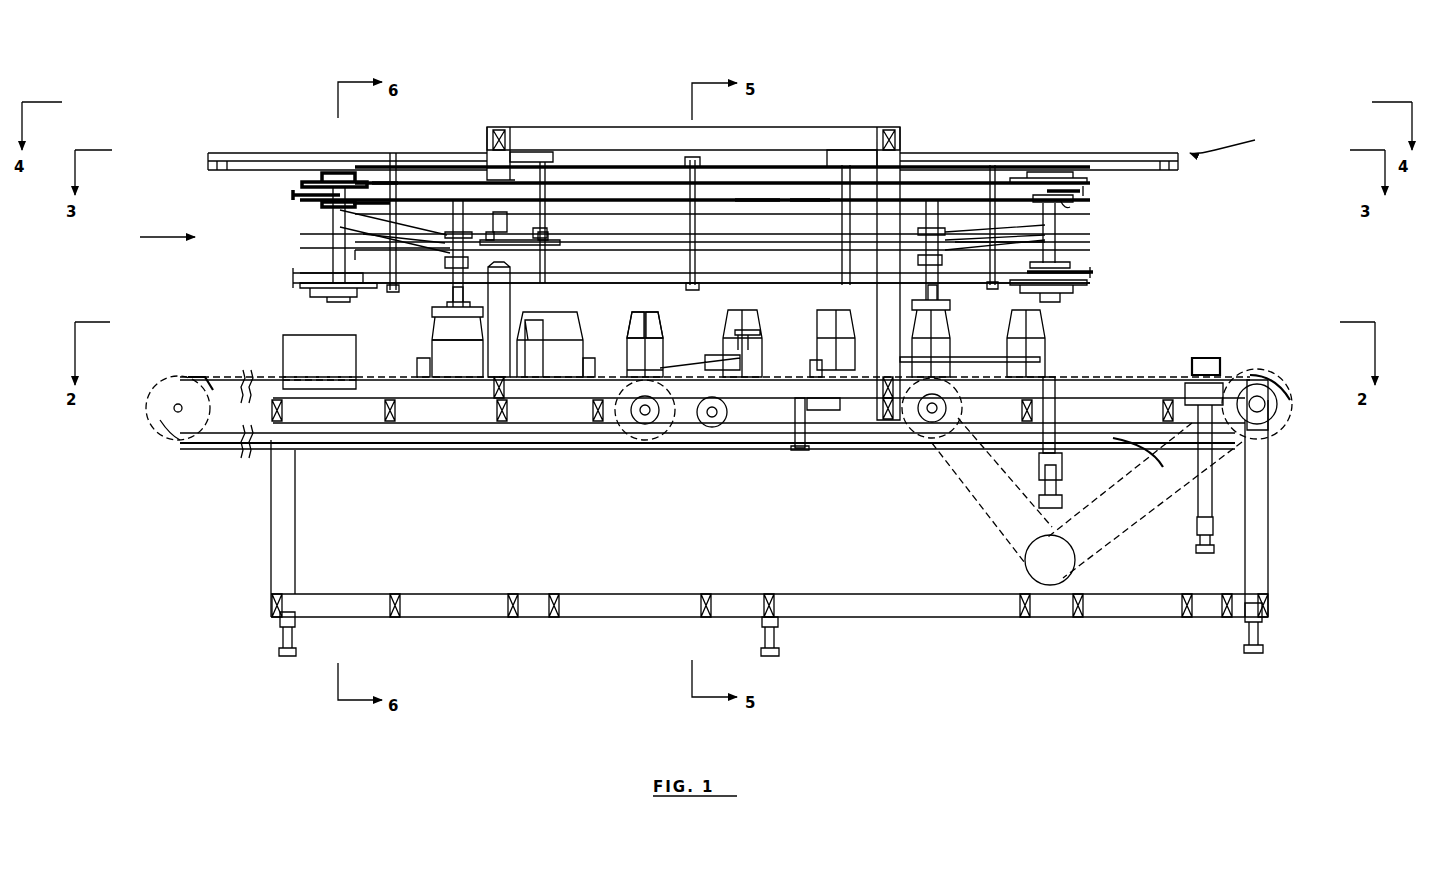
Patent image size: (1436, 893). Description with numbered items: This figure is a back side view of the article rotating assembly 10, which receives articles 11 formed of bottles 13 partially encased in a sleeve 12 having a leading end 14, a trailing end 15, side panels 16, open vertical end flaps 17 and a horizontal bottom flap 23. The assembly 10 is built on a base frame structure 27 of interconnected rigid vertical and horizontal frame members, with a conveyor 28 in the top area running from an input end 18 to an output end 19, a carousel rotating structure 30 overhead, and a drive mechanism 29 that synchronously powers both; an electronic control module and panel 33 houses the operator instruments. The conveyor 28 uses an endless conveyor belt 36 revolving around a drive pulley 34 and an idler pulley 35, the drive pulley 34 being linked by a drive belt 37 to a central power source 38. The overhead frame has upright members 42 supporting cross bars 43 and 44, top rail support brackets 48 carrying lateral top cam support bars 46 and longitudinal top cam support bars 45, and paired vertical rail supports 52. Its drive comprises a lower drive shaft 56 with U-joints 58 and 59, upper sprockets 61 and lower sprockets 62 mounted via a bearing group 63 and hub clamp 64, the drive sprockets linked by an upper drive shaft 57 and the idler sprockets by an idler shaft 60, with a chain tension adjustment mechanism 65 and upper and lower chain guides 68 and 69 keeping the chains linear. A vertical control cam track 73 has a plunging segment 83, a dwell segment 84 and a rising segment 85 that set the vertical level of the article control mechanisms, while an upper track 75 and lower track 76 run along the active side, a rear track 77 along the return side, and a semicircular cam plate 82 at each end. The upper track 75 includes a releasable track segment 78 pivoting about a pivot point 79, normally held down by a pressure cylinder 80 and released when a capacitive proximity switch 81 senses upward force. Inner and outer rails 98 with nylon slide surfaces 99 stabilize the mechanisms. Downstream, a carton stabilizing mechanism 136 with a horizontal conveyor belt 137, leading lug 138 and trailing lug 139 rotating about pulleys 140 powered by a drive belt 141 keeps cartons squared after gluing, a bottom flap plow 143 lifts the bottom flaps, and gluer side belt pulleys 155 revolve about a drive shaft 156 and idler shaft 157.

The article rotating assembly 10 is at (172, 152).
The article 11 is at (346, 247).
The sleeve 12 is at (645, 312).
The bottle 13 is at (635, 325).
The leading end 14 is at (495, 327).
The trailing end 15 is at (435, 335).
The side panel 16 is at (457, 332).
The vertical end flap 17 is at (417, 367).
The input end 18 is at (150, 352).
The output end 19 is at (1262, 307).
The horizontal bottom flap 23 is at (968, 357).
The base frame structure 27 is at (348, 437).
The conveyor 28 is at (190, 375).
The drive mechanism 29 is at (985, 545).
The carousel rotating structure 30 is at (1234, 140).
The electronic control module and panel 33 is at (283, 345).
The drive pulley 34 is at (1290, 415).
The idler pulley 35 is at (170, 440).
The endless conveyor belt 36 is at (160, 388).
The drive belt 37 is at (1128, 530).
The central power source 38 is at (1025, 572).
The upright member 42 is at (877, 298).
The cross bar 43 is at (790, 135).
The cross bar 44 is at (497, 127).
The longitudinal top cam support bar 45 is at (222, 153).
The lateral top cam support bar 46 is at (393, 153).
The top rail support bracket 48 is at (553, 168).
The vertical rail support 52 is at (990, 168).
The lower drive shaft 56 is at (1055, 410).
The upper drive shaft 57 is at (1055, 250).
The U-joint 58 is at (1062, 476).
The U-joint 59 is at (1050, 315).
The idler shaft 60 is at (333, 232).
The upper sprocket 61 is at (293, 195).
The lower sprocket 62 is at (1093, 273).
The bearing group 63 is at (312, 302).
The hub clamp 64 is at (305, 280).
The chain tension adjustment mechanism 65 is at (400, 183).
The upper chain guide 68 is at (785, 202).
The lower chain guide 69 is at (803, 283).
The vertical control cam track 73 is at (153, 238).
The upper track 75 is at (445, 234).
The lower track 76 is at (465, 255).
The rear track 77 is at (370, 242).
The releasable track segment 78 is at (520, 228).
The pivot point 79 is at (550, 232).
The pressure cylinder 80 is at (490, 232).
The capacitive proximity switch 81 is at (545, 228).
The semicircular cam plate 82 is at (300, 247).
The plunging segment 83 is at (419, 72).
The dwell segment 84 is at (700, 75).
The rising segment 85 is at (947, 92).
The rail 98 is at (738, 200).
The nylon slide surface 99 is at (805, 195).
The carton stabilizing mechanism 136 is at (700, 462).
The horizontal conveyor belt 137 is at (840, 449).
The leading lug 138 is at (710, 362).
The trailing lug 139 is at (620, 390).
The pulley 140 is at (635, 440).
The drive belt 141 is at (968, 490).
The bottom flap plow 143 is at (715, 340).
The pulley 155 is at (1210, 358).
The drive shaft 156 is at (1212, 505).
The idler shaft 157 is at (798, 450).